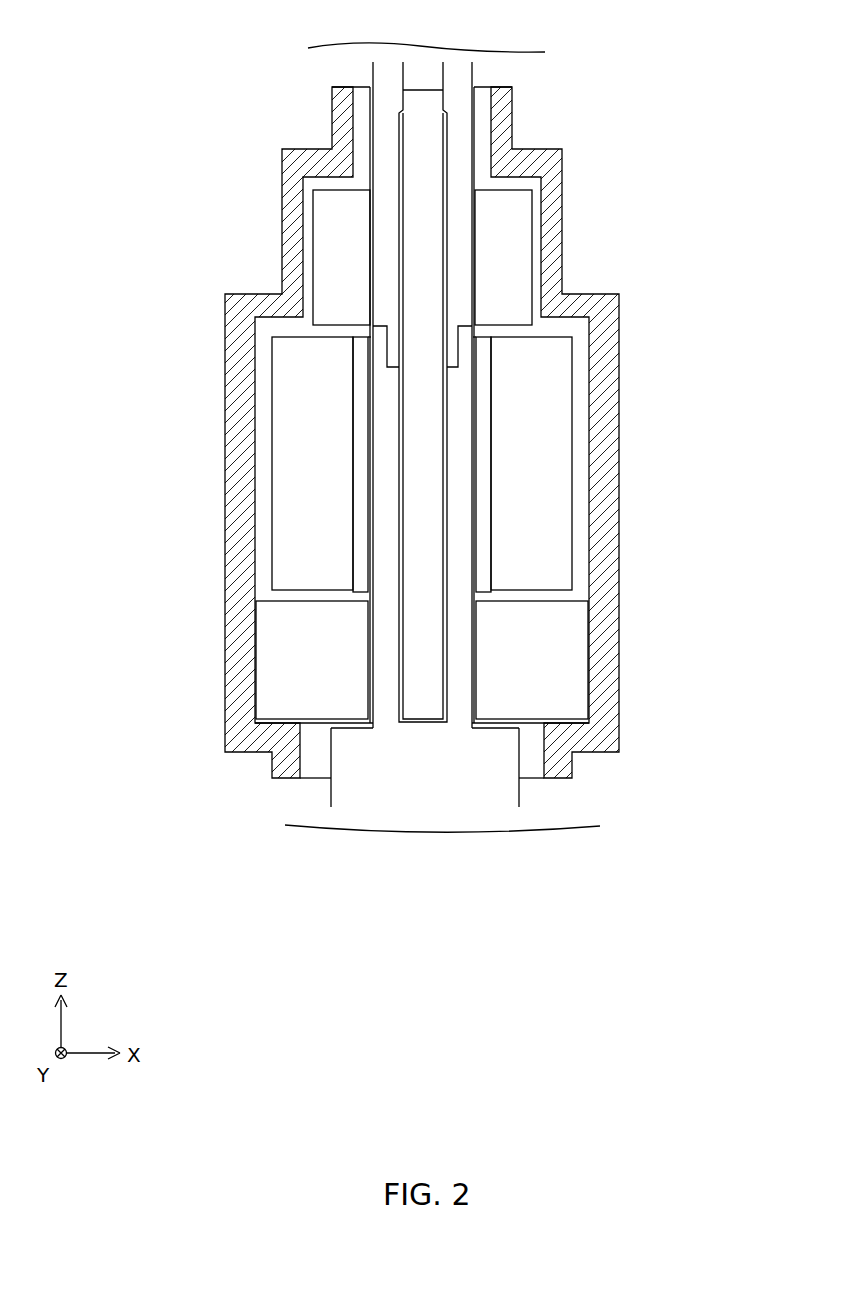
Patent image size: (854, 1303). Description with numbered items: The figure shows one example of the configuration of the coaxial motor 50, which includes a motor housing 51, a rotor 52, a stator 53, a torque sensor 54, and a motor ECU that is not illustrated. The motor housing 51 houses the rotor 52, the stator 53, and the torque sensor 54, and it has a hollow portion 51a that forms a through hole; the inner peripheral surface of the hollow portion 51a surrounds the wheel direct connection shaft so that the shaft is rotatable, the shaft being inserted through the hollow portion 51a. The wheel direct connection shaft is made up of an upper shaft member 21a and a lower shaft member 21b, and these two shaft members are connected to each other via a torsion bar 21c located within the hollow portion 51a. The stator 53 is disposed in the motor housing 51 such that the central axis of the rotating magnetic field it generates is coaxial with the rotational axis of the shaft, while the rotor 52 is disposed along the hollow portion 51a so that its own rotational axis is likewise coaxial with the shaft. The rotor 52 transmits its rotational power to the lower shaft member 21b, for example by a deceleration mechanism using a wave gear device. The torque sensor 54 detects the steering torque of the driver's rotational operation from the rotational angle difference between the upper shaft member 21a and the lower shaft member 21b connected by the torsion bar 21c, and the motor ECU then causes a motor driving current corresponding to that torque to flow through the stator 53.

The coaxial motor 50 is at (215, 23).
The upper shaft member 21a is at (470, 72).
The lower shaft member 21b is at (478, 766).
The torsion bar 21c is at (427, 108).
The motor housing 51 is at (563, 173).
The hollow portion 51a is at (473, 133).
The rotor 52 is at (482, 478).
The stator 53 is at (552, 398).
The torque sensor 54 is at (525, 248).